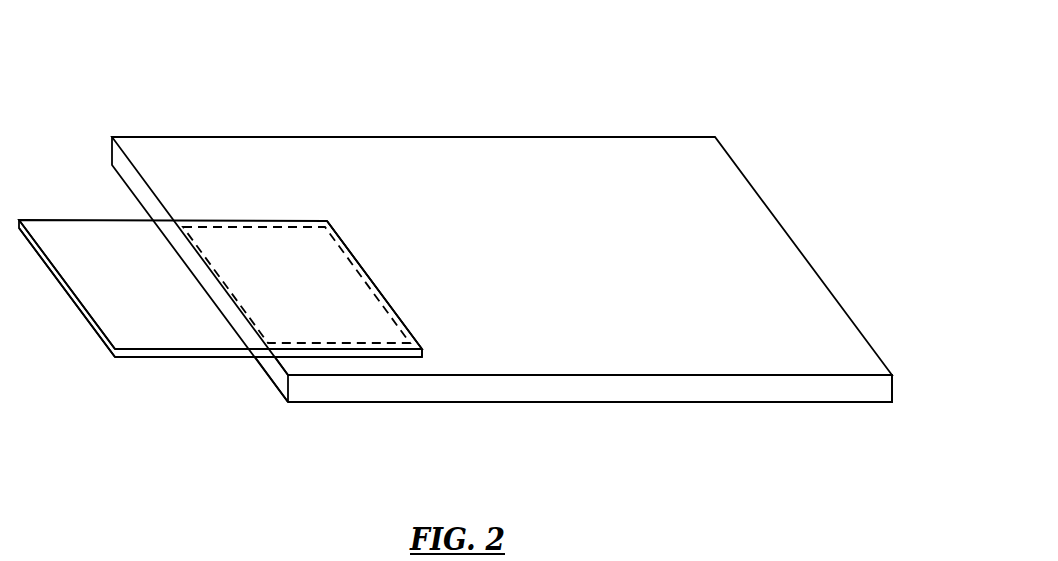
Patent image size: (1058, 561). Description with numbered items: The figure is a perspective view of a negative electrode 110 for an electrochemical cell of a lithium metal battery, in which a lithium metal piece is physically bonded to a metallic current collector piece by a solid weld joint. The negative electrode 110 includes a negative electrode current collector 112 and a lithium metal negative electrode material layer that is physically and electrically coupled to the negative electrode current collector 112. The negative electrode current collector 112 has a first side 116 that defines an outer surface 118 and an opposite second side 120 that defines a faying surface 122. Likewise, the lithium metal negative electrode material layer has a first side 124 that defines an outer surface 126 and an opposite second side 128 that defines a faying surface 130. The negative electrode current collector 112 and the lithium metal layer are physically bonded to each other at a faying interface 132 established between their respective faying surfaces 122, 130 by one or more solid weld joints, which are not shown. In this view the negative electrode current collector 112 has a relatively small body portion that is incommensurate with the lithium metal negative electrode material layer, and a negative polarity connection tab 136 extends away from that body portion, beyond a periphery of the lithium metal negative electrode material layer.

The negative electrode 110 is at (682, 88).
The negative electrode current collector 112 is at (68, 219).
The first side 116 is at (343, 228).
The outer surface 118 is at (355, 298).
The second side 120 is at (175, 367).
The faying surface 122 is at (418, 358).
The first side 124 is at (542, 413).
The outer surface 126 is at (710, 404).
The second side 128 is at (438, 128).
The faying surface 130 is at (272, 354).
The faying interface 132 is at (343, 367).
The negative polarity connection tab 136 is at (92, 331).